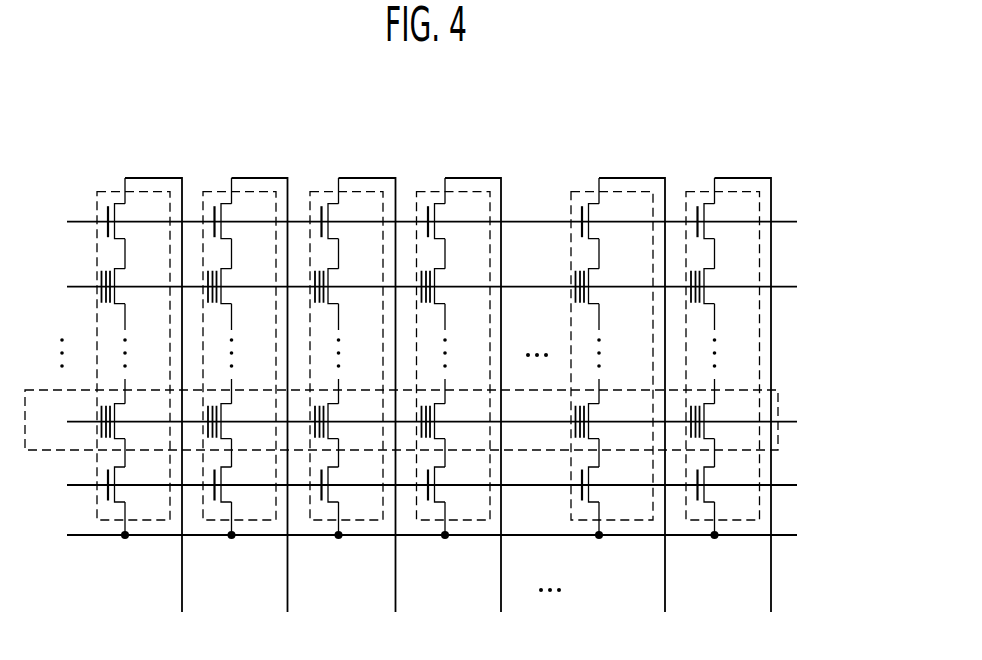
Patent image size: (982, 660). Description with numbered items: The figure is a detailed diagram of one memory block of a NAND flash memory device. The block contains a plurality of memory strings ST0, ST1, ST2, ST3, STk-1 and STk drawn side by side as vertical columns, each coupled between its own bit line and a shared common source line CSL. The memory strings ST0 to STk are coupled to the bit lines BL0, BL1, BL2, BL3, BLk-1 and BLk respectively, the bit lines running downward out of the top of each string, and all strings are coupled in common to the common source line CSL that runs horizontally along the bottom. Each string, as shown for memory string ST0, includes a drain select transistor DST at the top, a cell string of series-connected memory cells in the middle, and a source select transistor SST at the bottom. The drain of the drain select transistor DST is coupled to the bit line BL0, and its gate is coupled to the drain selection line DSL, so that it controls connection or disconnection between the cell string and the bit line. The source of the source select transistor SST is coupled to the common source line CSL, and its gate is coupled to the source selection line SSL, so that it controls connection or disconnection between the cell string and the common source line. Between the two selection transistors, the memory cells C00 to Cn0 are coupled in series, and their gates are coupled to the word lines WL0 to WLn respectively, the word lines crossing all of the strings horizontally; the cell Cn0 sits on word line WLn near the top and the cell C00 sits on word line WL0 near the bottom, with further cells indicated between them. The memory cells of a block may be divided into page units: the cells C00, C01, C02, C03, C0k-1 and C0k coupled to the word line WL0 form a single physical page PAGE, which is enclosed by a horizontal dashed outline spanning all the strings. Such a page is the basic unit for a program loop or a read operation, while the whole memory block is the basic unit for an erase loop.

The memory string ST0 is at (133, 333).
The memory string ST1 is at (239, 333).
The memory string ST2 is at (346, 333).
The memory string ST3 is at (454, 333).
The memory string STk-1 is at (610, 333).
The memory string STk is at (723, 333).
The drain select transistor DST is at (133, 219).
The source select transistor SST is at (131, 482).
The memory cell Cn0 is at (130, 283).
The memory cell C00 is at (130, 418).
The memory cell C01 is at (235, 418).
The memory cell C02 is at (342, 418).
The memory cell C03 is at (450, 418).
The memory cell C0k-1 is at (613, 418).
The memory cell C0k is at (719, 418).
The drain selection line DSL is at (416, 222).
The word line WLn is at (416, 287).
The word line WL0 is at (416, 422).
The source selection line SSL is at (416, 486).
The common source line CSL is at (416, 536).
The bit line BL0 is at (161, 410).
The bit line BL1 is at (267, 410).
The bit line BL2 is at (375, 410).
The bit line BL3 is at (481, 410).
The bit line BLk-1 is at (640, 410).
The bit line BLk is at (750, 410).
The physical page PAGE is at (778, 392).